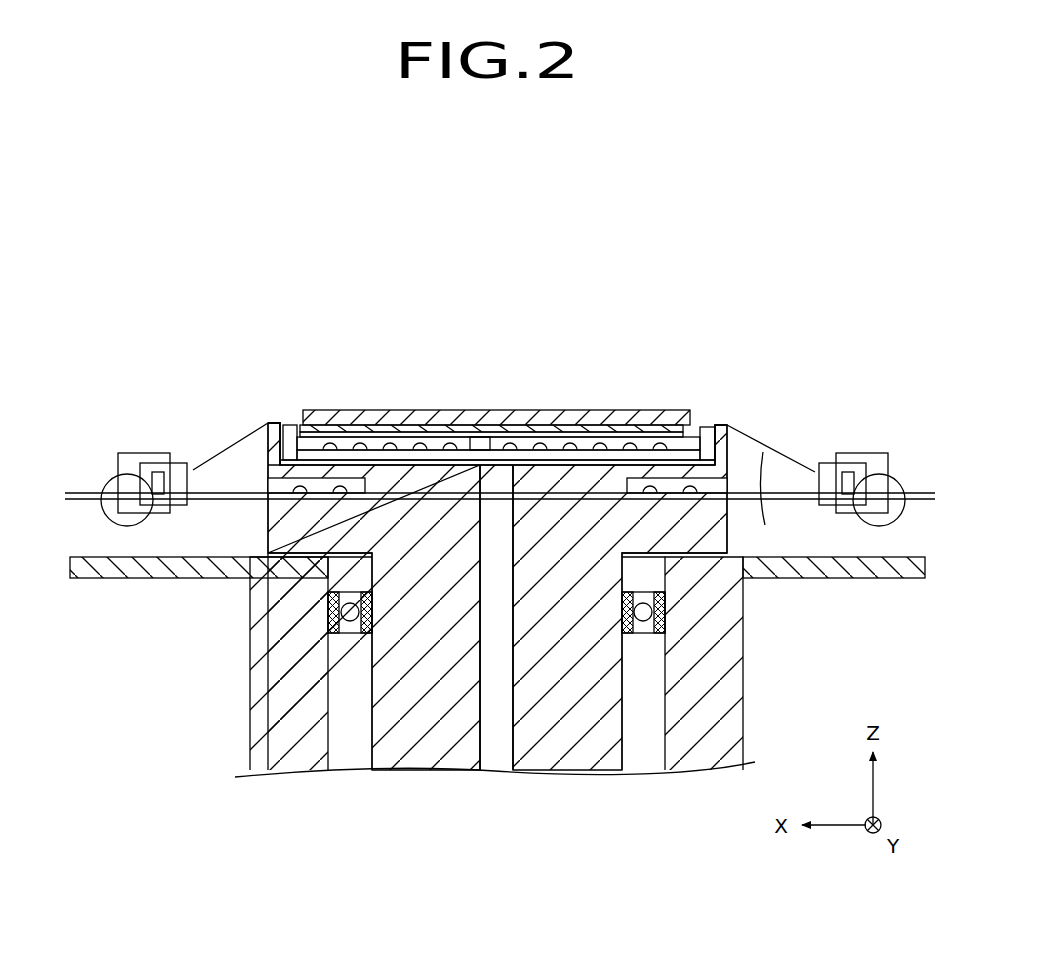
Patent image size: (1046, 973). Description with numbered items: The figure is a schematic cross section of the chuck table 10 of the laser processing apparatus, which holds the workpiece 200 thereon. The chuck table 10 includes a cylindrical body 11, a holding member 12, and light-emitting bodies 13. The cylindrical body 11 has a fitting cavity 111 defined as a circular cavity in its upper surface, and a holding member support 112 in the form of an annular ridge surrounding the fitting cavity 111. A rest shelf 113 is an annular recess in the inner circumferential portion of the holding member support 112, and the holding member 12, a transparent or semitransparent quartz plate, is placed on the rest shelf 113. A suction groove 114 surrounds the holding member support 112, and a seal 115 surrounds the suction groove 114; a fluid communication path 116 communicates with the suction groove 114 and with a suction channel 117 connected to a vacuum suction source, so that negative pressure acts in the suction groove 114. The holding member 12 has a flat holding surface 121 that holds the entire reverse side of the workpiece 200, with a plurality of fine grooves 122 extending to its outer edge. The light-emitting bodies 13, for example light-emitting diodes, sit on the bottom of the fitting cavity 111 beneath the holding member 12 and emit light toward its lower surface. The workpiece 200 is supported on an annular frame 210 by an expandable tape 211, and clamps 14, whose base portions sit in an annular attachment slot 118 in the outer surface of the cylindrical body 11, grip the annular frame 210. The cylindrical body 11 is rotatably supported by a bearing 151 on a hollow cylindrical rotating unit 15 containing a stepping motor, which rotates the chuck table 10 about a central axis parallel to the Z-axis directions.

The chuck table 10 is at (768, 345).
The cylindrical body 11 is at (636, 710).
The holding member 12 is at (478, 418).
The light-emitting bodies 13 is at (446, 437).
The clamps 14 is at (142, 450).
The rotating unit 15 is at (262, 678).
The fitting cavity 111 is at (395, 437).
The holding member support 112 is at (283, 447).
The rest shelf 113 is at (692, 425).
The suction groove 114 is at (292, 422).
The seal 115 is at (276, 420).
The fluid communication path 116 is at (345, 436).
The suction channel 117 is at (496, 770).
The attachment slot 118 is at (292, 489).
The holding surface 121 is at (522, 432).
The grooves 122 is at (562, 425).
The bearing 151 is at (332, 612).
The workpiece 200 is at (628, 406).
The annular frame 210 is at (818, 462).
The expandable tape 211 is at (765, 498).